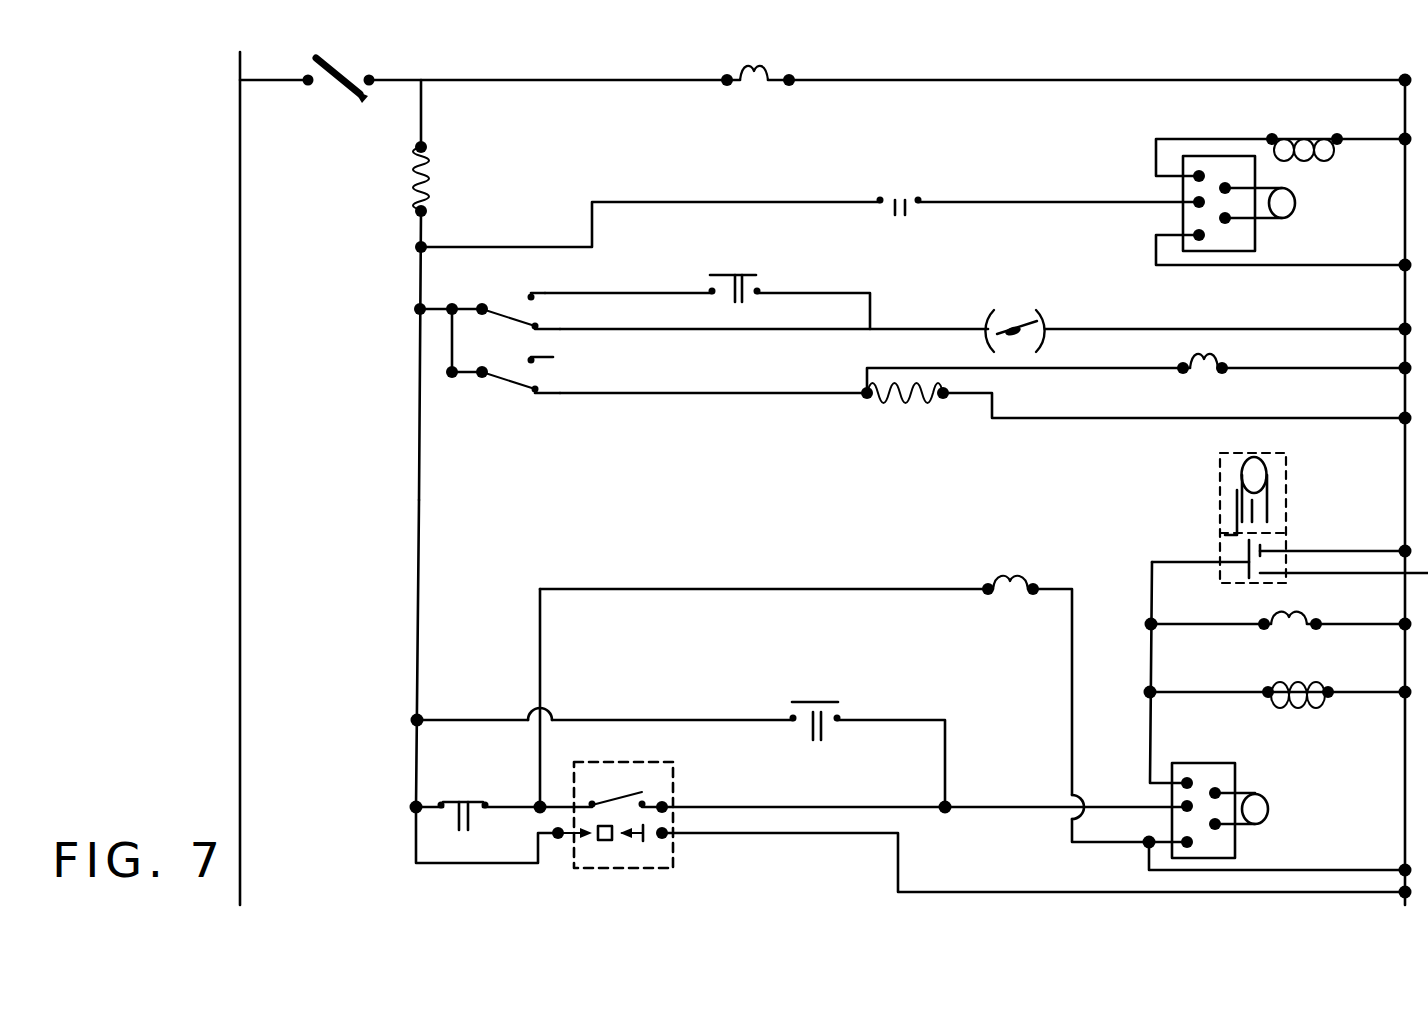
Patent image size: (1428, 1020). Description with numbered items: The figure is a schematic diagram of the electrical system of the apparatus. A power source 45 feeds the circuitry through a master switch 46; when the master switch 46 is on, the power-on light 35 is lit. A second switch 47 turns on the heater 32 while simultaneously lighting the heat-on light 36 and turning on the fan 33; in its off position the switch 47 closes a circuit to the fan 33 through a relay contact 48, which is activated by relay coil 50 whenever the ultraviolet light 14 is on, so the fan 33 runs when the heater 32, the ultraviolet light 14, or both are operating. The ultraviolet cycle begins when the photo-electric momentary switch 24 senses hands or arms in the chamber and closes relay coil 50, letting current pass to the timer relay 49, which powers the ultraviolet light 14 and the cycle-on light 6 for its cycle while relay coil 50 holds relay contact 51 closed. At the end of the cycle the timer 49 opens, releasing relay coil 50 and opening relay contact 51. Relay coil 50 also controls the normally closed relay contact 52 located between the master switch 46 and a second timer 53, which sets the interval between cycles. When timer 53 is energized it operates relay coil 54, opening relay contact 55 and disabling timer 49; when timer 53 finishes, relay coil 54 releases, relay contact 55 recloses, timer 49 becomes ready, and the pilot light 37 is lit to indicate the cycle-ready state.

The cycle on light 6 is at (1293, 628).
The ultraviolet light 14 is at (1276, 497).
The photo-electric momentary switch 24 is at (682, 786).
The heater 32 is at (932, 400).
The fan 33 is at (1040, 314).
The power on light 35 is at (745, 84).
The heat on light 36 is at (1210, 372).
The cycle ready pilot light 37 is at (1015, 575).
The power source 45 is at (248, 349).
The master switch 46 is at (348, 75).
The switch 47 is at (528, 398).
The relay contact 48 is at (748, 275).
The timer relay 49 is at (1248, 850).
The relay coil 50 is at (1318, 705).
The relay contact 51 is at (815, 700).
The relay contact 52 is at (908, 200).
The second timer 53 is at (1262, 236).
The relay coil 54 is at (1305, 137).
The relay contact 55 is at (460, 800).